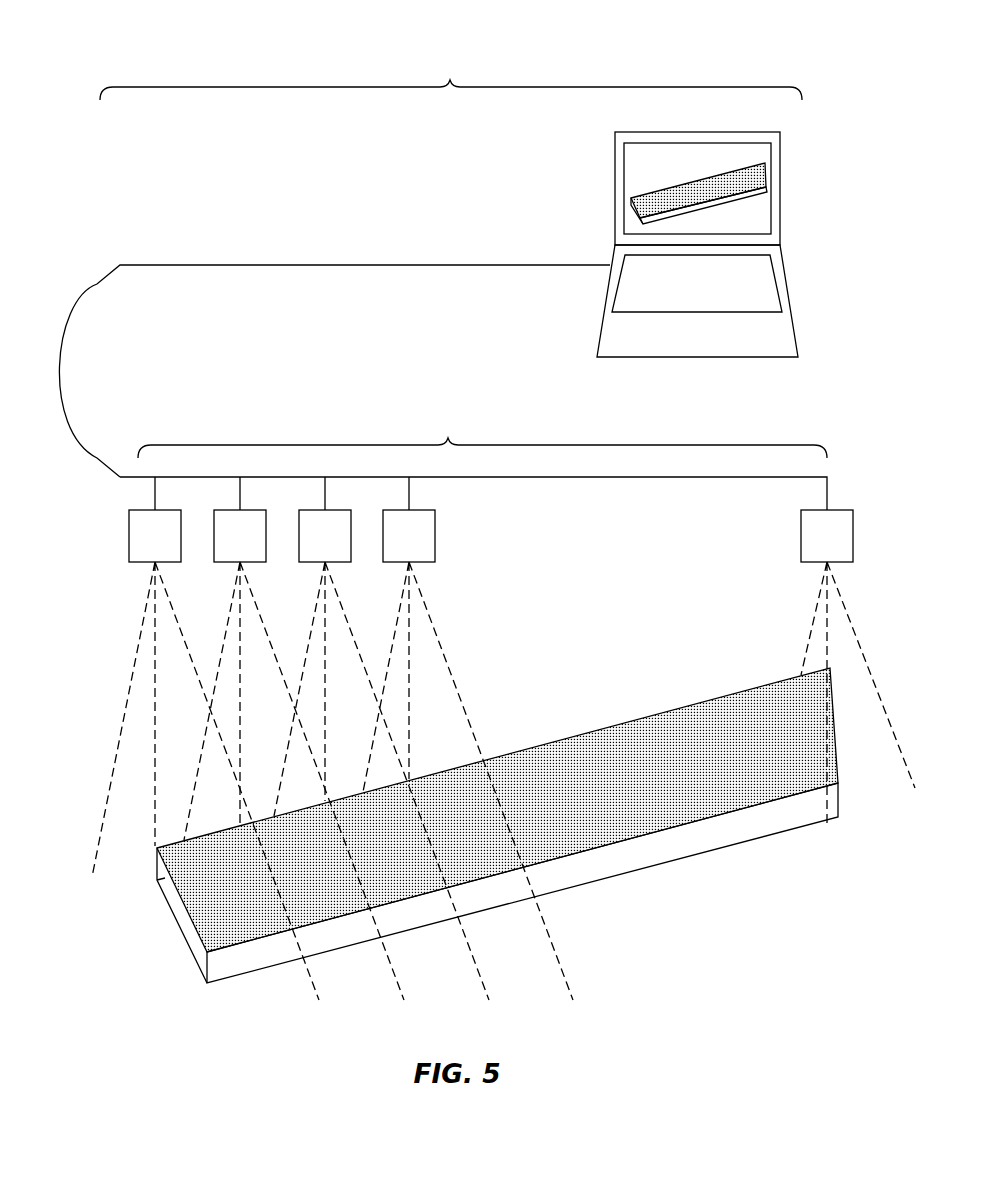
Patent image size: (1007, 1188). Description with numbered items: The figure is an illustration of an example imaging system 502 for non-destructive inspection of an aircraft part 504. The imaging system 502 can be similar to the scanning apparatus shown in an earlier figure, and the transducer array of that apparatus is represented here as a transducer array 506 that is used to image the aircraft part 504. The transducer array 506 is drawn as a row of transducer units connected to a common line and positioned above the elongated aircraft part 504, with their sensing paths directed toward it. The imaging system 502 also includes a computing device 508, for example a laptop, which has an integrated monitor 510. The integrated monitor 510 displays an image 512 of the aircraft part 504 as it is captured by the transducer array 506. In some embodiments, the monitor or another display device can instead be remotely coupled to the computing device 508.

The imaging system 502 is at (451, 75).
The aircraft part 504 is at (549, 728).
The transducer array 506 is at (503, 704).
The computing device 508 is at (661, 225).
The integrated monitor 510 is at (671, 175).
The image 512 is at (638, 224).